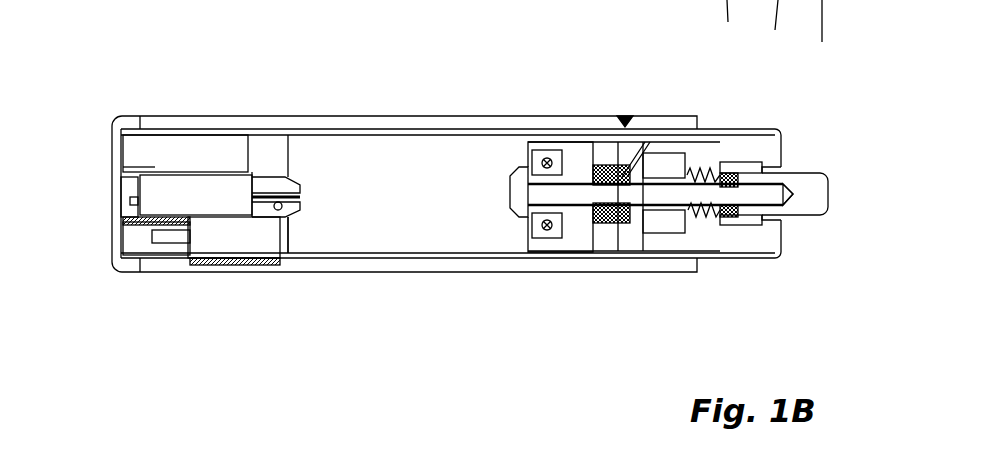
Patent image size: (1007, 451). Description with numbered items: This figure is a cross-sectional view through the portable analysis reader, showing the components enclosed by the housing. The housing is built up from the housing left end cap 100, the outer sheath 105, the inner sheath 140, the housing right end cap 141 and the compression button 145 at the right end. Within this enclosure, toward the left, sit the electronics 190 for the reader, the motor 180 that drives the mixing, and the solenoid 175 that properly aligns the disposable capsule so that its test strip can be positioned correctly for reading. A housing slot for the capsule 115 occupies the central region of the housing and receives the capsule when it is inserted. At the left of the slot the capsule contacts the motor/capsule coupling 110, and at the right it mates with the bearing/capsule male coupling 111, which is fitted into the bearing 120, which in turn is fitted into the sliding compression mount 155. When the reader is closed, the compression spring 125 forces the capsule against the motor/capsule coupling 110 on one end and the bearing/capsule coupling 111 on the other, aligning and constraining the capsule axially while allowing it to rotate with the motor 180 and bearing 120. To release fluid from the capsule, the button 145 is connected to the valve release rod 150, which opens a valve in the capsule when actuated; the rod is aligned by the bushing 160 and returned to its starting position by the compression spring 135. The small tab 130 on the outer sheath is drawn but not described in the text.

The housing left end cap 100 is at (125, 116).
The outer sheath 105 is at (226, 116).
The motor/capsule coupling 110 is at (273, 182).
The bearing/capsule male coupling 111 is at (523, 218).
The housing slot for the capsule 115 is at (394, 178).
The bearing 120 is at (542, 150).
The compression spring 125 is at (597, 167).
The notch 130 is at (625, 117).
The compression spring 135 is at (693, 175).
The inner sheath 140 is at (737, 128).
The housing right end cap 141 is at (765, 148).
The compression button 145 is at (813, 173).
The valve release rod 150 is at (745, 197).
The sliding compression mount 155 is at (588, 235).
The bushing 160 is at (663, 220).
The solenoid 175 is at (215, 243).
The motor 180 is at (161, 205).
The electronics 190 is at (181, 150).